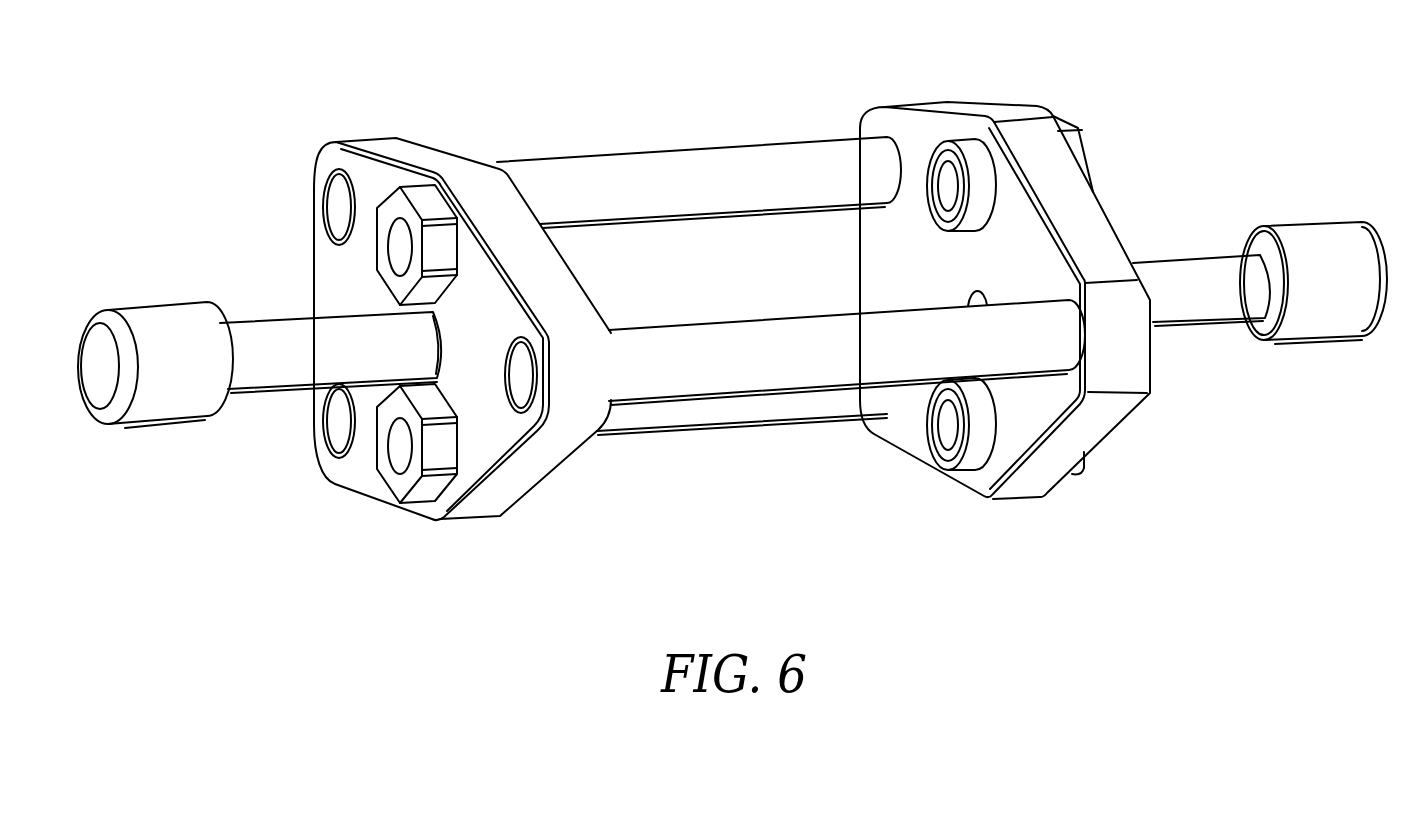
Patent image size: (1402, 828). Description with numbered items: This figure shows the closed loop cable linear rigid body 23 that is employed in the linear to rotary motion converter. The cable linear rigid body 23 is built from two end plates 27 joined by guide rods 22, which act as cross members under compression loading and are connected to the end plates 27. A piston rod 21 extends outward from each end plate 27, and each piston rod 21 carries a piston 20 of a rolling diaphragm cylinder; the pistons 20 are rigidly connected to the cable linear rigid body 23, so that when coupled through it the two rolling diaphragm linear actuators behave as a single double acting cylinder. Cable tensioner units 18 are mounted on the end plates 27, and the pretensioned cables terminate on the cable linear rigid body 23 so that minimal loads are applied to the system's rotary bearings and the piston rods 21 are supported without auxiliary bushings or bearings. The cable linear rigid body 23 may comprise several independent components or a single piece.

The cable tensioner unit 18 is at (393, 212).
The piston 20 is at (170, 330).
The piston rod 21 is at (275, 350).
The guide rod 22 is at (697, 178).
The cable linear rigid body 23 is at (197, 179).
The end plate 27 is at (413, 157).